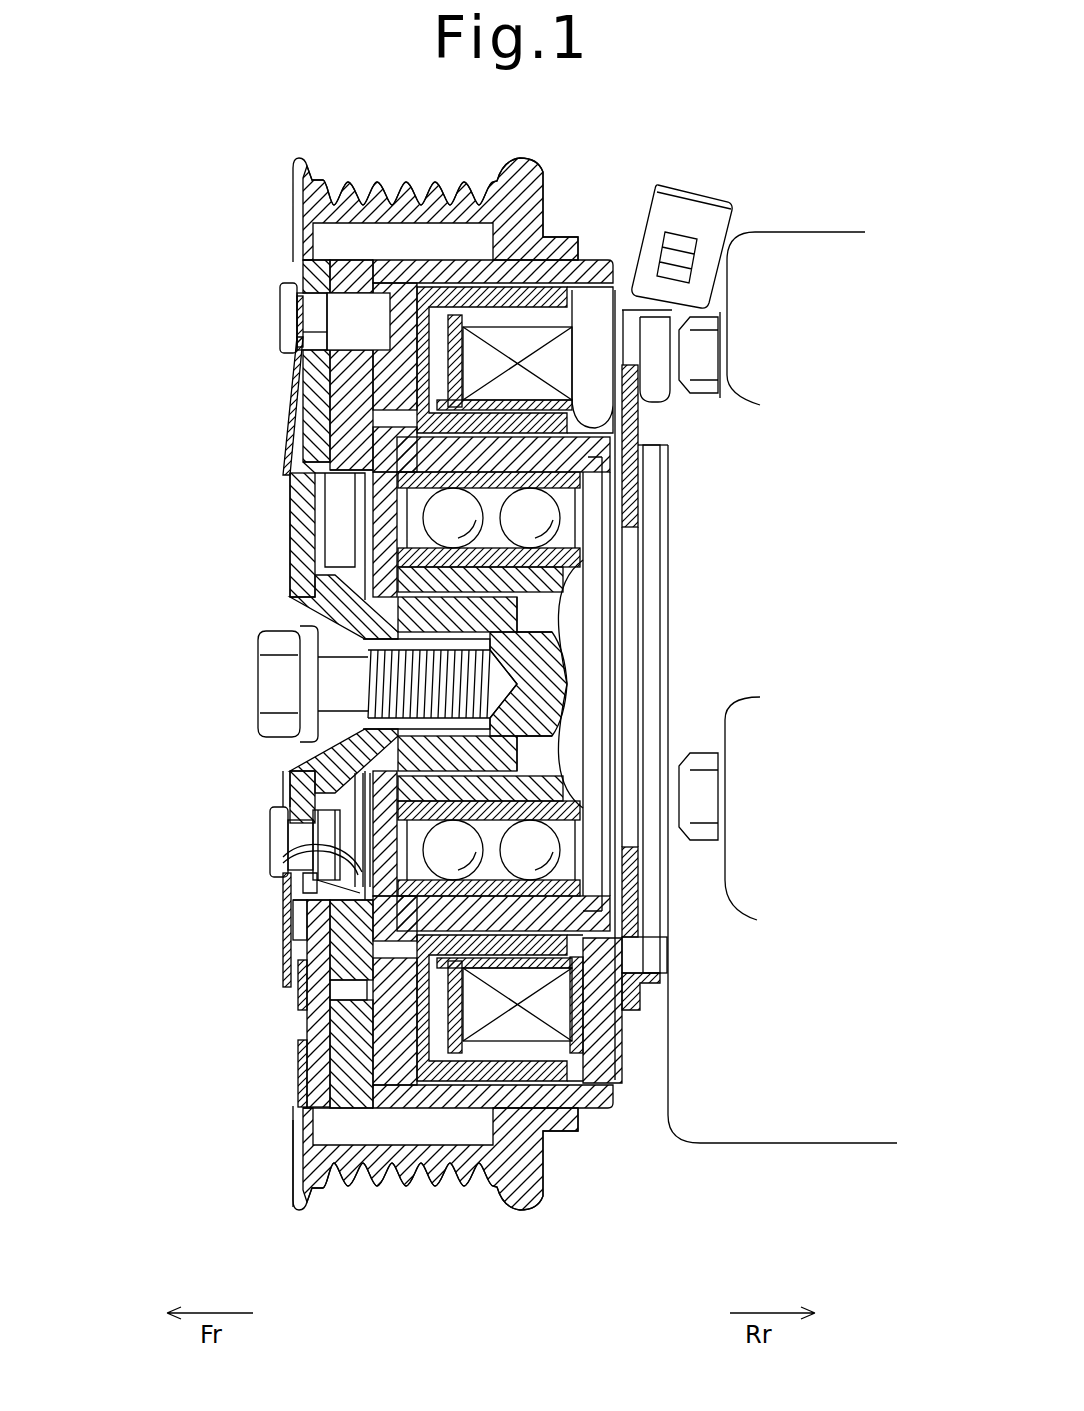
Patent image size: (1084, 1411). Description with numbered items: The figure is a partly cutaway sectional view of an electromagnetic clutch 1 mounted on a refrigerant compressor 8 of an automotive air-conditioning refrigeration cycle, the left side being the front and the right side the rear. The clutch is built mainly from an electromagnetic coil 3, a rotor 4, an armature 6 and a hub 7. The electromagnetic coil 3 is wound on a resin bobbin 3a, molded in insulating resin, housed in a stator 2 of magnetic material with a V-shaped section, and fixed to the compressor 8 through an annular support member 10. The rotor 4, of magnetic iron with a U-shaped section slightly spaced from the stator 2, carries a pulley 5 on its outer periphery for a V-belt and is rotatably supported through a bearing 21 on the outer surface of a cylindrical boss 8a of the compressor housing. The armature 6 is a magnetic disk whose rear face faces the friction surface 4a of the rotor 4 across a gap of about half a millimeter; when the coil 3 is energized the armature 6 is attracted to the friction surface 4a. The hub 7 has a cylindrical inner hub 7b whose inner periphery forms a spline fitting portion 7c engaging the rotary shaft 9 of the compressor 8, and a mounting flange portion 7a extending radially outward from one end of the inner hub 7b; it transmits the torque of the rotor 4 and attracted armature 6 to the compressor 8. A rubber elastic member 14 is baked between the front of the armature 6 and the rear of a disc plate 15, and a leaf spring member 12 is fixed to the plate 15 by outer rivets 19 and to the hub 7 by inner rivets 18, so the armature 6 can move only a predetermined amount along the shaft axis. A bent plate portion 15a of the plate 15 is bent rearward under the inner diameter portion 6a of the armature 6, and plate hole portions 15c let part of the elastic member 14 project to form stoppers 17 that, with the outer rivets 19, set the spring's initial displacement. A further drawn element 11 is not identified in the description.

The electromagnetic clutch 1 is at (287, 1217).
The stator 2 is at (523, 340).
The electromagnetic coil 3 is at (597, 288).
The resin bobbin 3a is at (577, 393).
The rotor 4 is at (447, 270).
The friction surface 4a is at (347, 372).
The pulley 5 is at (396, 182).
The armature 6 is at (345, 1095).
The inner diameter portion 6a is at (310, 862).
The hub 7 is at (300, 513).
The mounting flange portion 7a is at (297, 490).
The inner hub 7b is at (500, 757).
The spline fitting portion 7c is at (345, 630).
The refrigerant compressor 8 is at (771, 1127).
The cylindrical boss 8a is at (540, 580).
The rotary shaft 9 is at (545, 655).
The annular support member 10 is at (655, 905).
The bolt 11 is at (258, 703).
The leaf spring member 12 is at (297, 393).
The elastic member 14 is at (307, 1023).
The plate 15 is at (303, 1073).
The bent plate portion 15a is at (307, 878).
The plate hole portions 15c is at (307, 977).
The stoppers 17 is at (290, 933).
The inner rivets 18 is at (273, 837).
The outer rivets 19 is at (282, 315).
The bearing 21 is at (600, 483).